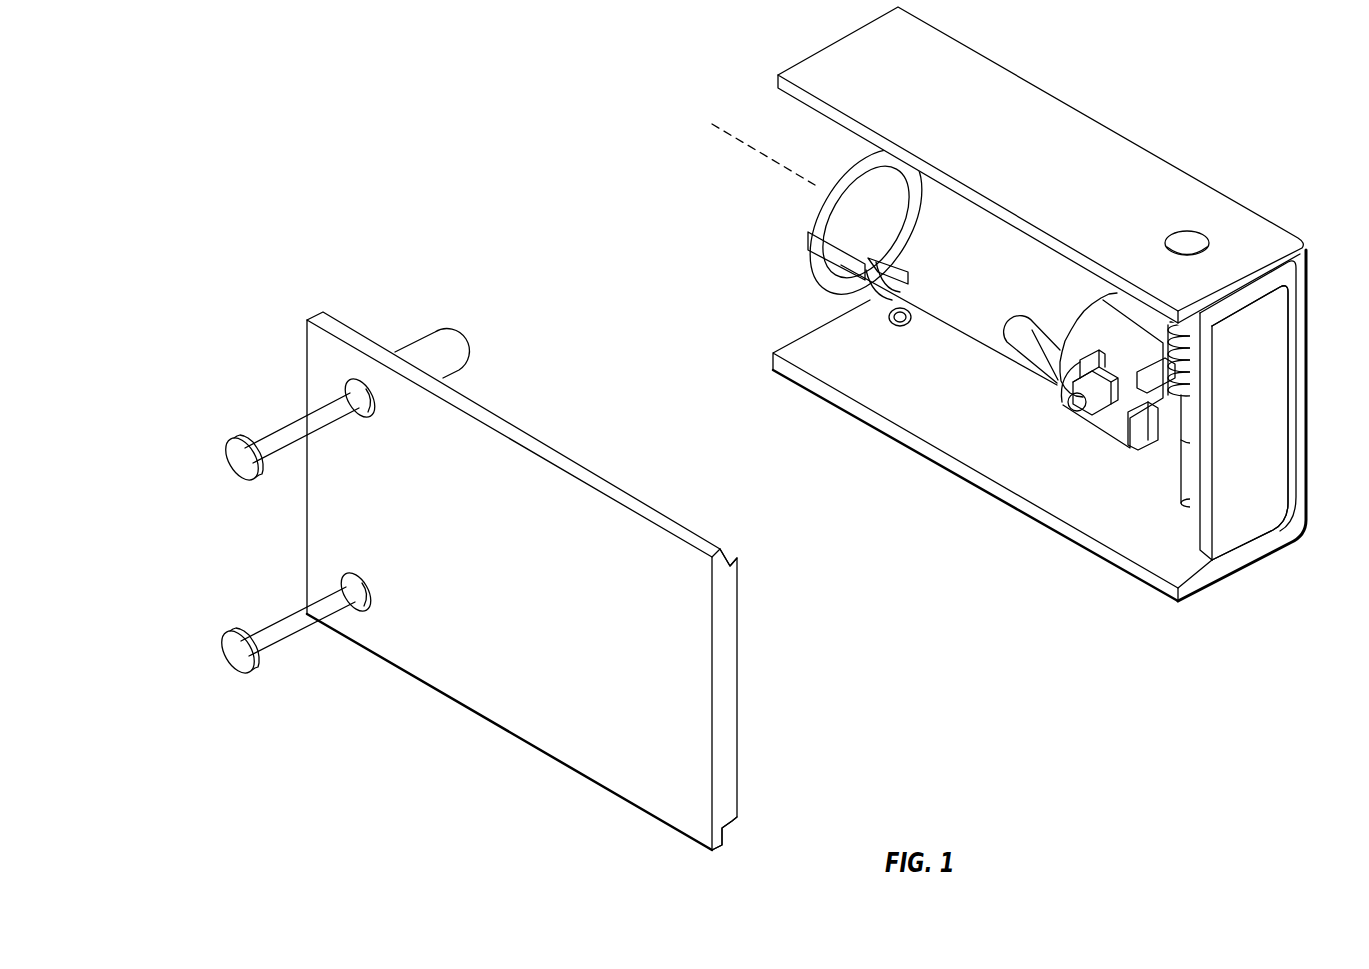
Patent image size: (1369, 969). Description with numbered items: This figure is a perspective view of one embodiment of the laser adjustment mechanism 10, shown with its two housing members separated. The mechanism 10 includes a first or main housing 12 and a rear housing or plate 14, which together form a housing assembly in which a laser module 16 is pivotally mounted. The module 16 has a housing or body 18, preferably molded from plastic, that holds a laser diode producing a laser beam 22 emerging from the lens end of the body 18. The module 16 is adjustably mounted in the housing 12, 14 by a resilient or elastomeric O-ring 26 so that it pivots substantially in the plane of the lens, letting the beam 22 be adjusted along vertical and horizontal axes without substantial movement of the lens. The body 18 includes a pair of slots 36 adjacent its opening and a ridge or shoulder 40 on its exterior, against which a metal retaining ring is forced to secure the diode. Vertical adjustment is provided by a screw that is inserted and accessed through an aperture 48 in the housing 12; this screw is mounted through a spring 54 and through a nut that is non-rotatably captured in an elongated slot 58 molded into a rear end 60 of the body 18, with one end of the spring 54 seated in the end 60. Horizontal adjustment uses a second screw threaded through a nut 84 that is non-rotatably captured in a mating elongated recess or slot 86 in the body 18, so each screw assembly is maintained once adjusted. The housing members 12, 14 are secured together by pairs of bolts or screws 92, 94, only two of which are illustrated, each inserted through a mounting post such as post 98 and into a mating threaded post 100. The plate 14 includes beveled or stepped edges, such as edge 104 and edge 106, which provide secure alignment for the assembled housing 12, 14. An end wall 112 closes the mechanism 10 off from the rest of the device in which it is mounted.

The laser adjustment mechanism 10 is at (527, 157).
The main housing 12 is at (1074, 174).
The rear housing or plate 14 is at (515, 591).
The laser module 16 is at (970, 318).
The module housing or body 18 is at (987, 276).
The laser beam 22 is at (756, 157).
The O-ring 26 is at (816, 252).
The slots 36 is at (853, 258).
The ridge or shoulder 40 is at (905, 190).
The aperture 48 is at (1192, 236).
The spring 54 is at (1204, 350).
The elongated slot 58 is at (1160, 397).
The rear end 60 is at (1078, 322).
The nut 84 is at (1090, 415).
The elongated recess or slot 86 is at (1080, 372).
The bolt or screw 92 is at (276, 626).
The bolt or screw 94 is at (275, 430).
The mounting post 98 is at (435, 336).
The threaded post 100 is at (912, 328).
The beveled or stepped edge 104 is at (735, 828).
The upper notch 106 is at (732, 562).
The end wall 112 is at (1270, 454).